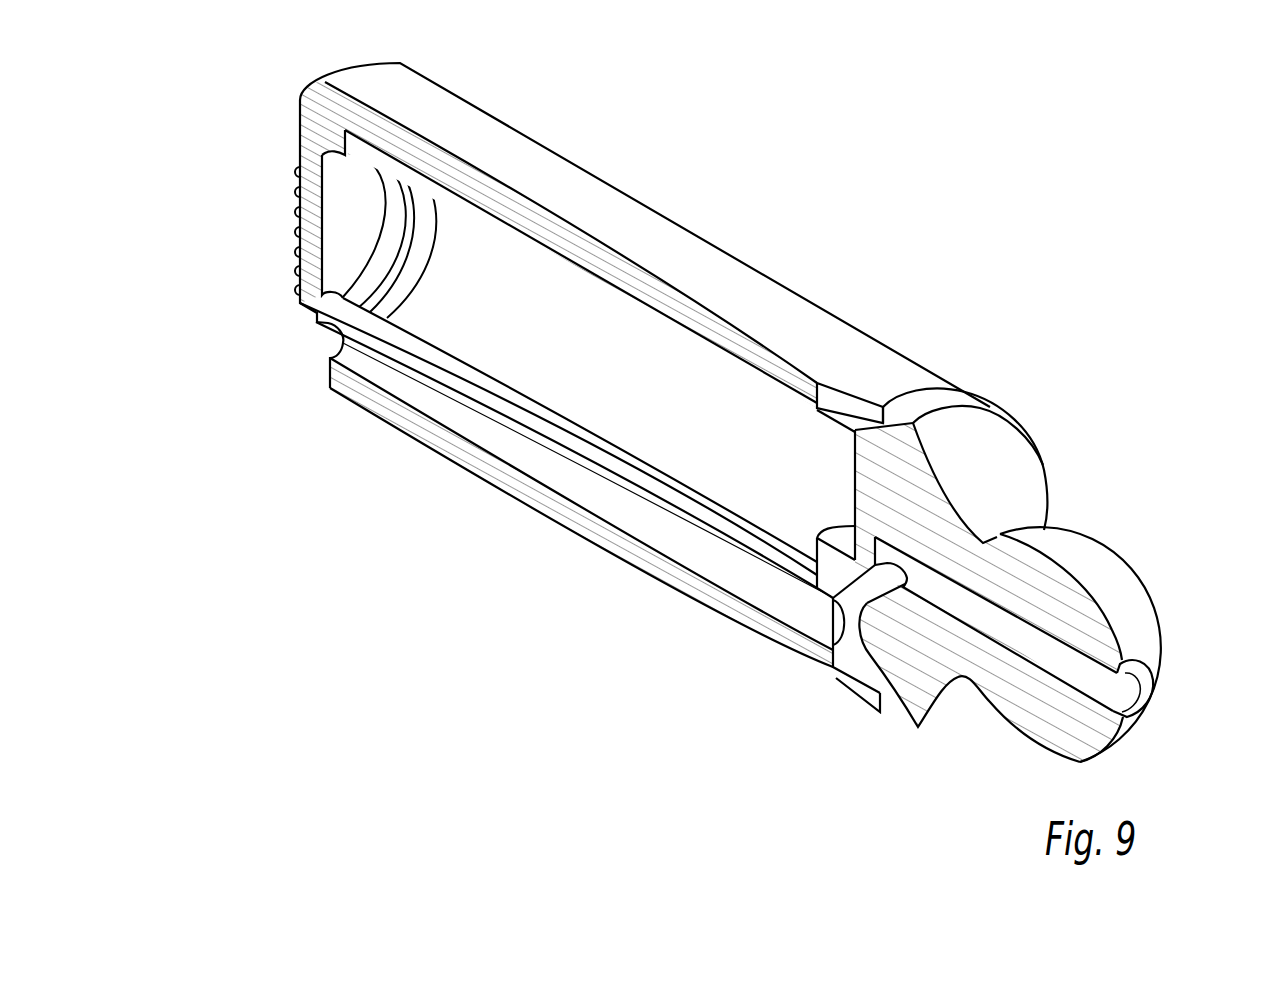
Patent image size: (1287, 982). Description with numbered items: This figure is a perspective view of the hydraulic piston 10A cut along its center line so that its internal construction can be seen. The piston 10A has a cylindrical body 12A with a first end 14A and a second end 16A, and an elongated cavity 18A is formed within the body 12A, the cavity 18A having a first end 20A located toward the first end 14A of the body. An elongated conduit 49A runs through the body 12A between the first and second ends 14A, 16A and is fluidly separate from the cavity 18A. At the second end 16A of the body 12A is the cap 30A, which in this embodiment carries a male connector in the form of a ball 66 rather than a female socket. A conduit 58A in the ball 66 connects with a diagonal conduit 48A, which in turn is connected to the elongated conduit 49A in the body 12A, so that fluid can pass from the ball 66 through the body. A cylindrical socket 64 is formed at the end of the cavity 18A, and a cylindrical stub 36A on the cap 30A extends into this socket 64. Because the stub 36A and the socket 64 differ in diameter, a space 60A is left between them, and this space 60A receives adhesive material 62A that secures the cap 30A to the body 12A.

The hydraulic piston 10A is at (940, 224).
The cylindrical body 12A is at (655, 221).
The first end 14A is at (300, 118).
The second end 16A is at (918, 390).
The elongated cavity 18A is at (632, 351).
The first end of cavity 20A is at (388, 228).
The cap 30A is at (1167, 641).
The cylindrical stub 36A is at (961, 548).
The diagonal conduit 48A is at (920, 728).
The elongated conduit 49A is at (588, 492).
The conduit 58A is at (1045, 653).
The space 60A is at (862, 400).
The adhesive material 62A is at (849, 388).
The cylindrical socket 64 is at (828, 400).
The ball 66 is at (1143, 597).